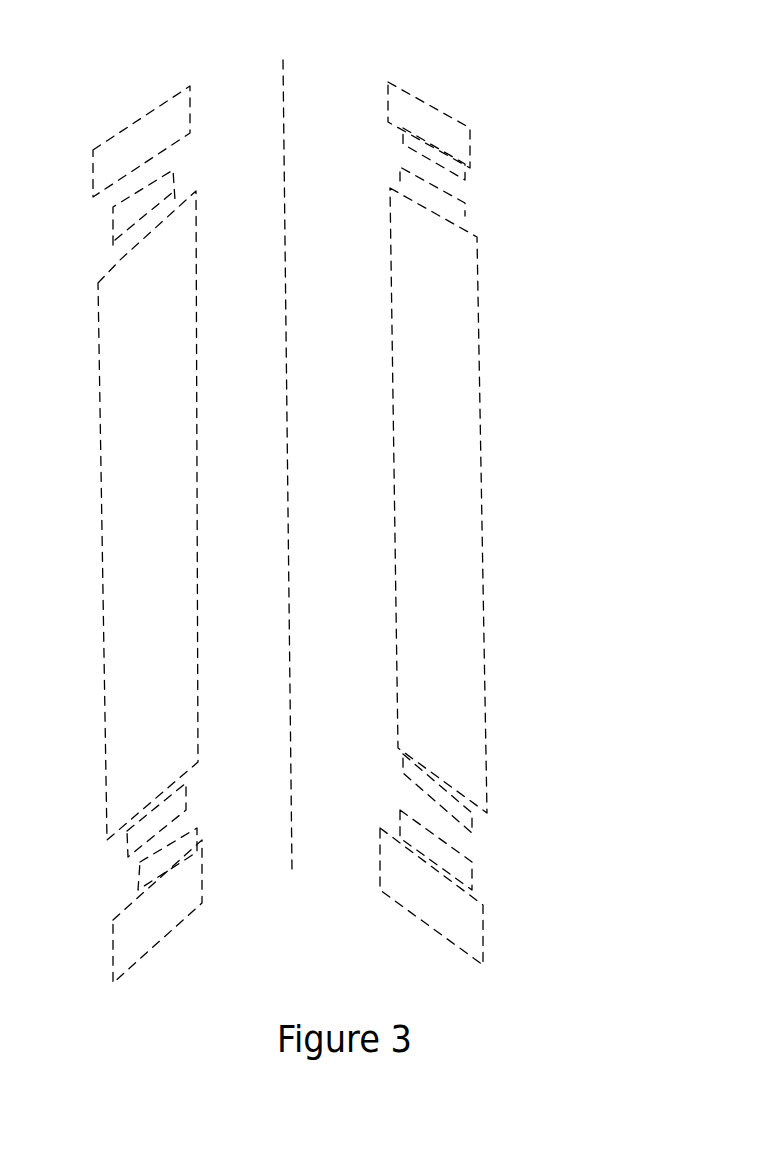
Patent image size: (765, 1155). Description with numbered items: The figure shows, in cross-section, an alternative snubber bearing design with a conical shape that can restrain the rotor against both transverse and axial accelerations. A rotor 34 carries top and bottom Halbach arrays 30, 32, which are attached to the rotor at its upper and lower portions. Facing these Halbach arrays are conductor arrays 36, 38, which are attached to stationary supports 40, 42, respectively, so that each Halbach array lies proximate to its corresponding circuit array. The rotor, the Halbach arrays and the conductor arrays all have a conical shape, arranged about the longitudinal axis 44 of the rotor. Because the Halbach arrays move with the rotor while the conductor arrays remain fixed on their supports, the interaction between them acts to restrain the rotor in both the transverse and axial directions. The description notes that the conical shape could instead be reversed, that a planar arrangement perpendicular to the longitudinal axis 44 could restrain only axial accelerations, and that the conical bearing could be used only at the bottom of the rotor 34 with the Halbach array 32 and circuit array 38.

The top Halbach array 30 is at (459, 210).
The bottom Halbach array 32 is at (470, 830).
The rotor 34 is at (478, 309).
The conductor array 36 is at (450, 170).
The conductor array 38 is at (473, 875).
The stationary support 40 is at (472, 137).
The stationary support 42 is at (483, 933).
The longitudinal axis 44 is at (285, 115).